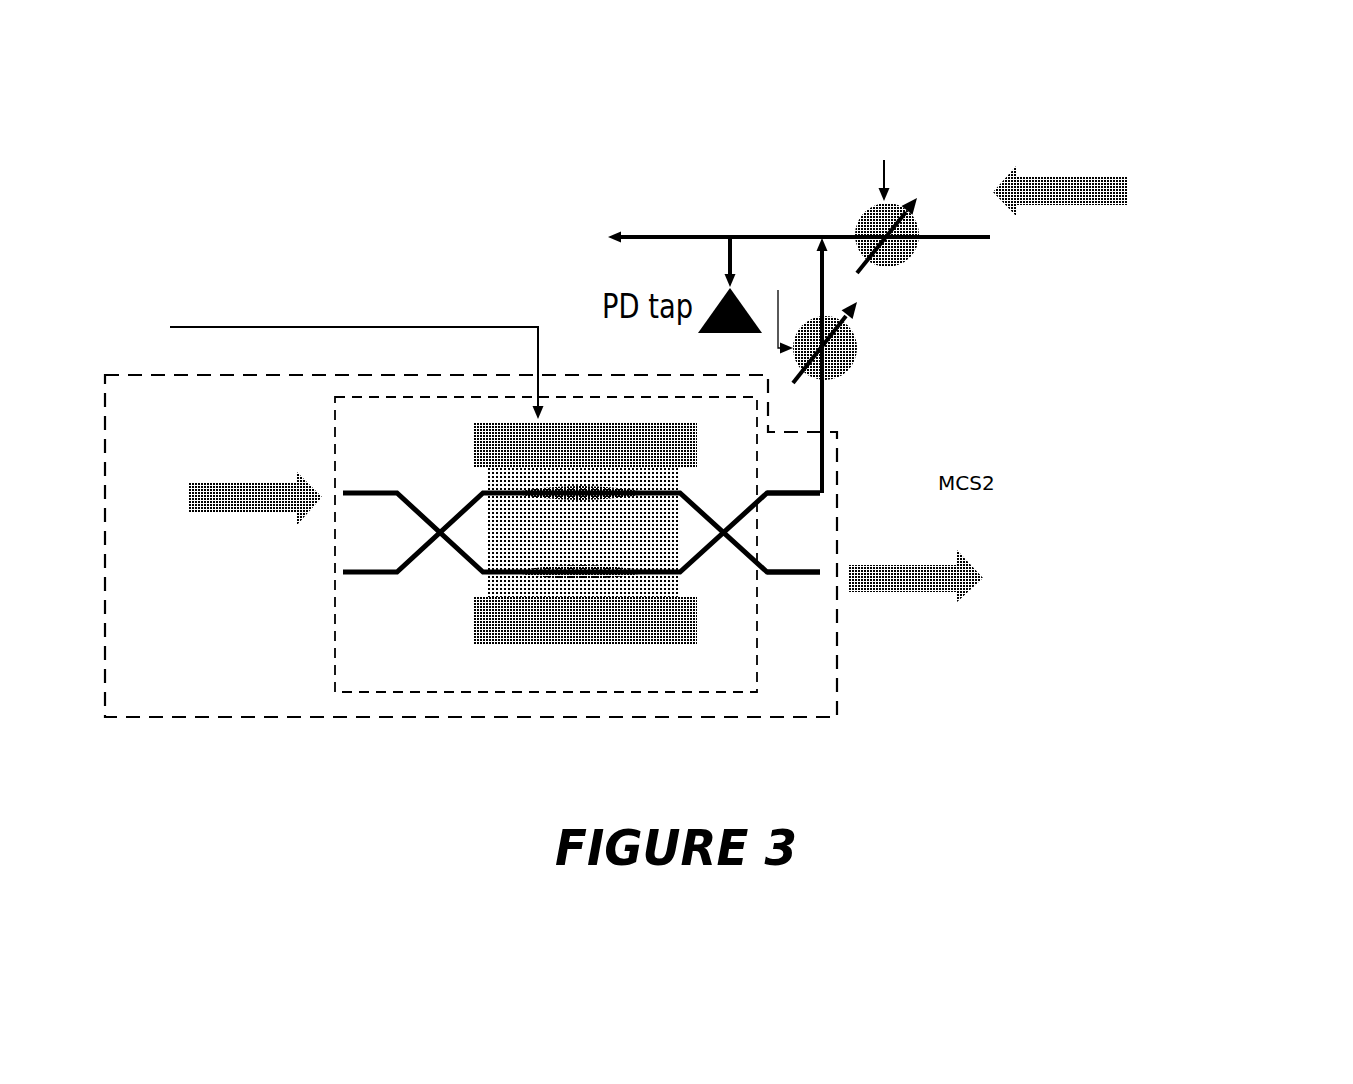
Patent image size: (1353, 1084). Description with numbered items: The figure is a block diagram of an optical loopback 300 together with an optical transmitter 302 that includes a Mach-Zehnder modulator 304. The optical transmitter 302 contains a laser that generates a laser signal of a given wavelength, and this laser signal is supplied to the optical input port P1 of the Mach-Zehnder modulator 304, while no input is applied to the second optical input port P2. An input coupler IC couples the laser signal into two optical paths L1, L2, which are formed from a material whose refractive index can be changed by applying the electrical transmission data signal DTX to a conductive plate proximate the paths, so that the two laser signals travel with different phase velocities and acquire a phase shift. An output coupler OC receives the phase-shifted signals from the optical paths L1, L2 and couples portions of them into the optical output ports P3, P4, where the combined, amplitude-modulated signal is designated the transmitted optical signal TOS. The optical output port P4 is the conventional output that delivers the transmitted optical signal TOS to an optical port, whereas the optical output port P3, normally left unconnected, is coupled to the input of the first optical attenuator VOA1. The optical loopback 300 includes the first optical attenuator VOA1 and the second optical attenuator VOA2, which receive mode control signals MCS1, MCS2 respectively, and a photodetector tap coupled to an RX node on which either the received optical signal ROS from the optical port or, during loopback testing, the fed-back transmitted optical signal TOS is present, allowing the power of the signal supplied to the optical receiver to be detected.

The optical loopback 300 is at (940, 292).
The optical transmitter 302 is at (471, 546).
The Mach-Zehnder modulator 304 is at (583, 544).
The optical input port P1 is at (385, 490).
The optical input port P2 is at (397, 577).
The optical output port P3 is at (800, 490).
The optical output port P4 is at (795, 577).
The input coupler IC is at (439, 502).
The output coupler OC is at (727, 501).
The optical path L1 is at (580, 507).
The optical path L2 is at (580, 560).
The transmission data signal DTX is at (333, 366).
The RX node RX is at (813, 230).
The transmitted optical signal TOS is at (943, 434).
The received optical signal ROS is at (1146, 195).
The first optical attenuator VOA1 is at (855, 366).
The second optical attenuator VOA2 is at (862, 208).
The mode control signal MCS1 is at (778, 311).
The mode control signal MCS2 is at (890, 167).